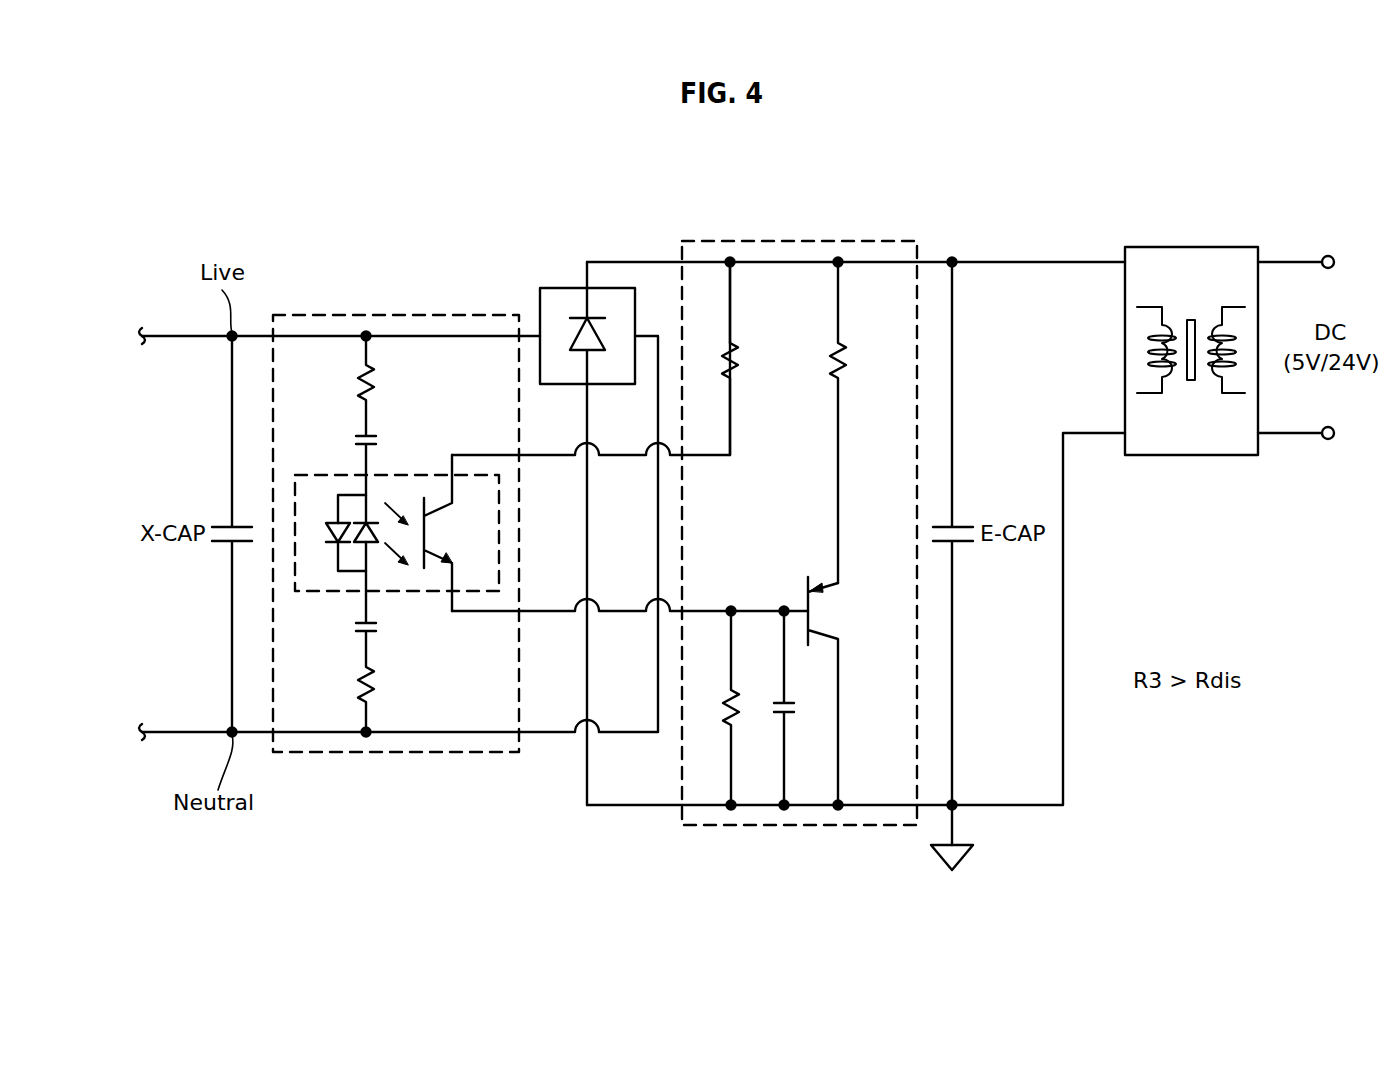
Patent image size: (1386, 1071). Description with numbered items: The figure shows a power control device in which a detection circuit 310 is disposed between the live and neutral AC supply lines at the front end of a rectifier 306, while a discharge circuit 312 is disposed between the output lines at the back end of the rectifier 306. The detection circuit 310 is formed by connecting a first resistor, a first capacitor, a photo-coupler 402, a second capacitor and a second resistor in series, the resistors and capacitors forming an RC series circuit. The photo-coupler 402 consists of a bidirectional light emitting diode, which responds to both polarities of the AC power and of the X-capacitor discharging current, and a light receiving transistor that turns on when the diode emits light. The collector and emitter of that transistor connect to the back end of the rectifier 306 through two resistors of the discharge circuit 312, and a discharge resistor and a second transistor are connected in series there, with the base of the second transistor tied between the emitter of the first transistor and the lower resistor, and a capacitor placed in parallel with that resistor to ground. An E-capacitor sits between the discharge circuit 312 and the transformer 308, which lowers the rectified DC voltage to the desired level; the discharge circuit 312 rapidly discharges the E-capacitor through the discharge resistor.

The detection circuit 310 is at (386, 315).
The photo-coupler 402 is at (342, 591).
The rectifier 306 is at (550, 288).
The discharge circuit 312 is at (800, 241).
The transformer 308 is at (1190, 247).